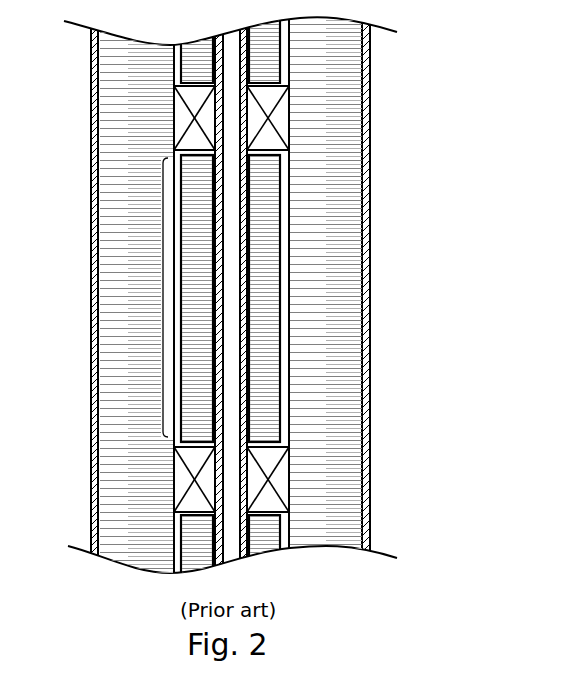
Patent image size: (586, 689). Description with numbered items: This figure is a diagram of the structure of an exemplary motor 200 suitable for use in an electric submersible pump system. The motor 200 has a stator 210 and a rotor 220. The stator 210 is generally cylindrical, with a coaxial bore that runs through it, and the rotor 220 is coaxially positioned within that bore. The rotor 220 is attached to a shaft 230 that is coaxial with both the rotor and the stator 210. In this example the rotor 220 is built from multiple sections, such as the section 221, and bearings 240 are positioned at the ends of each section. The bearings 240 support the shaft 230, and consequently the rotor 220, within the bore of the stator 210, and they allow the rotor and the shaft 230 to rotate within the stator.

The motor 200 is at (253, 344).
The stator 210 is at (371, 75).
The rotor 220 is at (273, 279).
The rotor section 221 is at (161, 298).
The shaft 230 is at (258, 549).
The bearing 240 is at (289, 125).